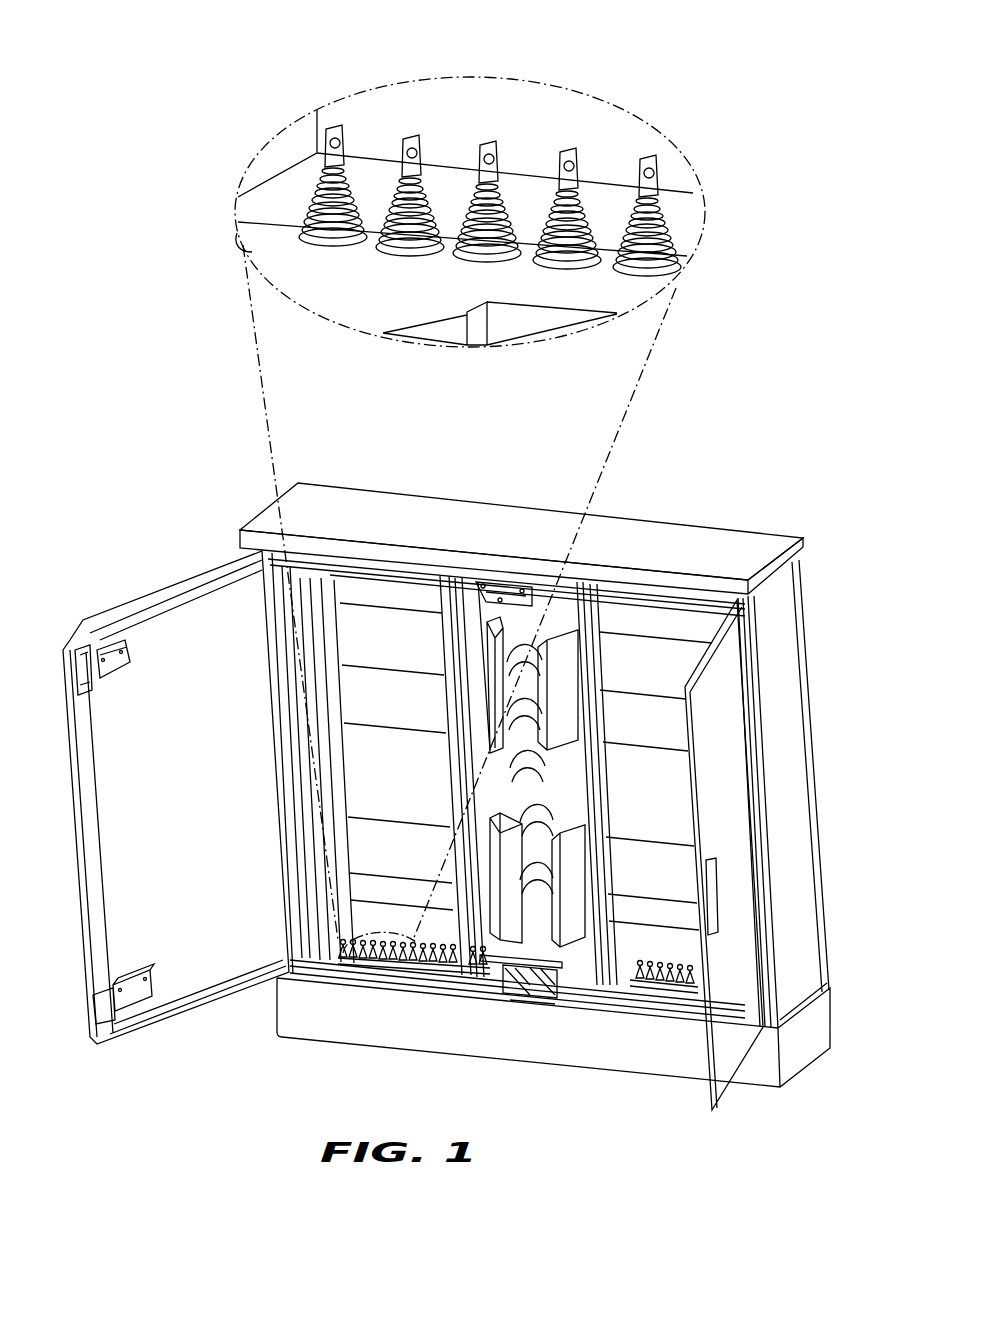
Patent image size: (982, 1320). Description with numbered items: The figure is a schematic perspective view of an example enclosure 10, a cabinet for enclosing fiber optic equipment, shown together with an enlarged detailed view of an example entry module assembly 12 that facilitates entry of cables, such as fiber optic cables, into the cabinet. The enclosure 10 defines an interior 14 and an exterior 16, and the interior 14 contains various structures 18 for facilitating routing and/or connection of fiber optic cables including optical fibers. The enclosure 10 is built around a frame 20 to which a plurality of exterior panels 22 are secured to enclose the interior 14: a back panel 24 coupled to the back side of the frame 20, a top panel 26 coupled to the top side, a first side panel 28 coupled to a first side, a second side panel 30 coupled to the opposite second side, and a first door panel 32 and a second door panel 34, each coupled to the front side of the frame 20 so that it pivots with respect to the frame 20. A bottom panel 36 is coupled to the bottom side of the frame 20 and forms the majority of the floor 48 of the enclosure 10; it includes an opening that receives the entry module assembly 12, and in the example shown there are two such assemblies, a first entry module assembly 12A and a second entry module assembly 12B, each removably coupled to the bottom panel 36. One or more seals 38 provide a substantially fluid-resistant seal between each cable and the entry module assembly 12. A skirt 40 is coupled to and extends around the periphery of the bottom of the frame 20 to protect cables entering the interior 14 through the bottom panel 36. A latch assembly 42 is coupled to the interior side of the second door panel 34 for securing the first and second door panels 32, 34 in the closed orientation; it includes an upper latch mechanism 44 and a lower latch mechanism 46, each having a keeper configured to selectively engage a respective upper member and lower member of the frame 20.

The enclosure 10 is at (735, 453).
The entry module assembly 12 is at (558, 113).
The first entry module assembly 12A is at (368, 963).
The second entry module assembly 12B is at (648, 985).
The interior 14 is at (652, 604).
The exterior 16 is at (385, 797).
The structures 18 is at (610, 704).
The frame 20 is at (362, 566).
The exterior panels 22 is at (148, 628).
The back panel 24 is at (805, 642).
The top panel 26 is at (714, 532).
The first side panel 28 is at (792, 706).
The second side panel 30 is at (248, 520).
The first door panel 32 is at (738, 754).
The second door panel 34 is at (223, 639).
The bottom panel 36 is at (440, 968).
The seals 38 is at (348, 170).
The skirt 40 is at (412, 1010).
The latch assembly 42 is at (114, 693).
The upper latch mechanism 44 is at (128, 673).
The lower latch mechanism 46 is at (155, 985).
The floor 48 is at (572, 968).